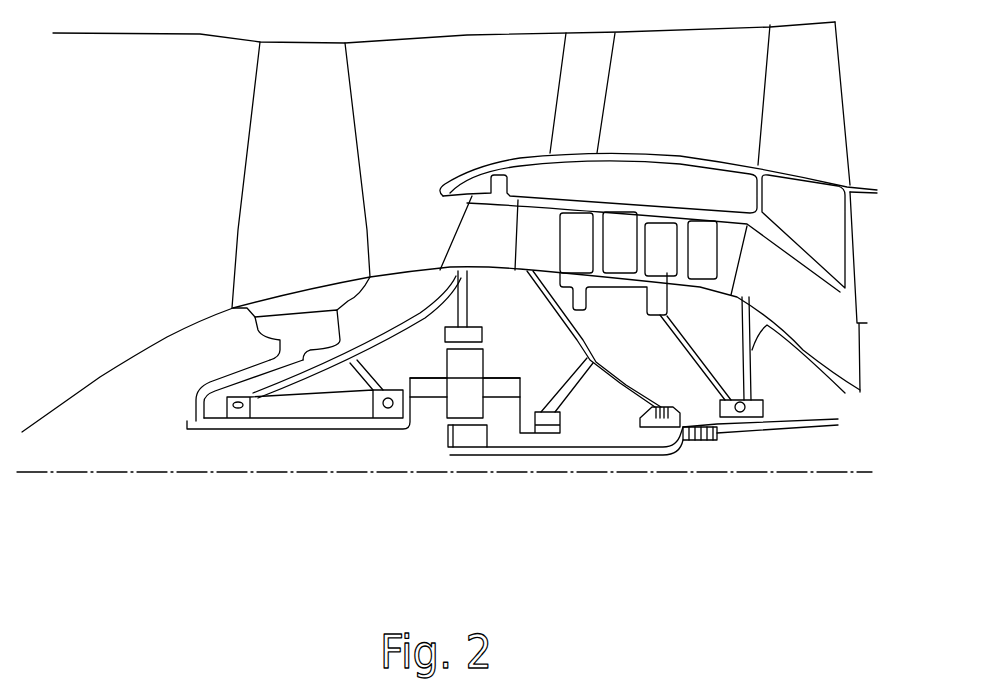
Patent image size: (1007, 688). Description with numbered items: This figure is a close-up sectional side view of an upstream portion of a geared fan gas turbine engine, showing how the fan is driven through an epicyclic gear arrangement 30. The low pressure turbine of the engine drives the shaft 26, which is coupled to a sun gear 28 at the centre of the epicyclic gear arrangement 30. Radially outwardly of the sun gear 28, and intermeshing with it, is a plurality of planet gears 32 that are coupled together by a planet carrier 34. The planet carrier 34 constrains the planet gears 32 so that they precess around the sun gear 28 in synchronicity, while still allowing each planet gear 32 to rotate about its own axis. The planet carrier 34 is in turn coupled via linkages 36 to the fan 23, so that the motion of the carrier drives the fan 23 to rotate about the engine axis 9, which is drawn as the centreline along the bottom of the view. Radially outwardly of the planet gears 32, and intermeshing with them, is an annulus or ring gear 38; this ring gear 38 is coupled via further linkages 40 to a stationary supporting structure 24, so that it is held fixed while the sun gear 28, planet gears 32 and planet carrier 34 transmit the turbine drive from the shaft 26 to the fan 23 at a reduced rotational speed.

The engine axis 9 is at (222, 472).
The fan 23 is at (263, 177).
The stationary supporting structure 24 is at (473, 233).
The shaft 26 is at (625, 453).
The sun gear 28 is at (467, 438).
The epicyclic gear arrangement 30 is at (412, 447).
The planet gears 32 is at (452, 405).
The planet carrier 34 is at (512, 422).
The linkages 36 is at (413, 420).
The ring gear 38 is at (443, 337).
The linkages 40 is at (470, 312).